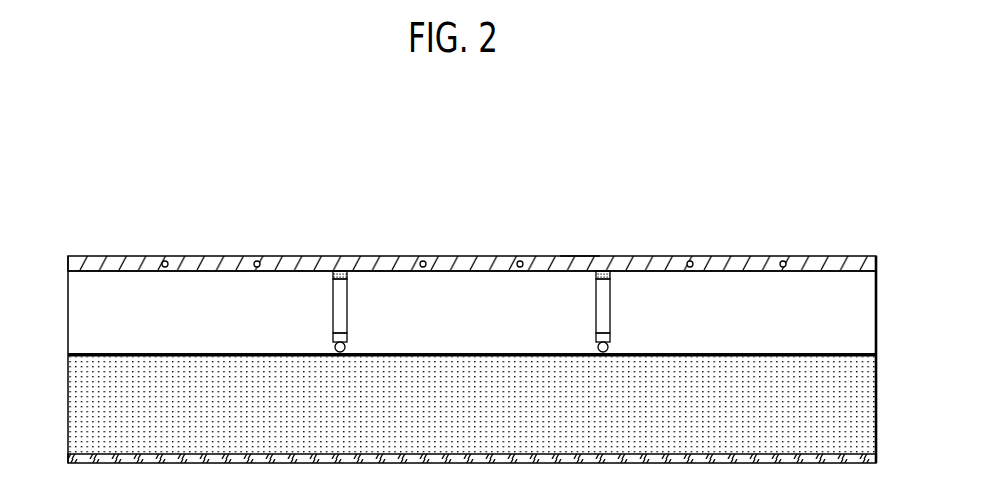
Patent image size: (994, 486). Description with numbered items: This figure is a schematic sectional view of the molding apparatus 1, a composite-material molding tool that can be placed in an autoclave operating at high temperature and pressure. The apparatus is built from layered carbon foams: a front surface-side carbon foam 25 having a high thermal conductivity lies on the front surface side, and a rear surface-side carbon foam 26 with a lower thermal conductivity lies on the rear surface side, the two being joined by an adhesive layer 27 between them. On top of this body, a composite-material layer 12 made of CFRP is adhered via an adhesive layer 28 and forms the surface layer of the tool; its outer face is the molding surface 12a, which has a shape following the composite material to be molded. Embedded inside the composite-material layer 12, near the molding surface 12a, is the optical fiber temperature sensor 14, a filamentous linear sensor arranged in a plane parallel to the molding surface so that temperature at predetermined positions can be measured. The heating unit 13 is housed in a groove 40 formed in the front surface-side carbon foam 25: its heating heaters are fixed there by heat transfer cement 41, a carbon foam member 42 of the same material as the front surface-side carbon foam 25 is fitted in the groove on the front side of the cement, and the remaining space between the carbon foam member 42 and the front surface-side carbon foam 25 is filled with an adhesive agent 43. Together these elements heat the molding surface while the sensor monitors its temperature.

The molding apparatus 1 is at (500, 204).
The composite-material layer 12 is at (115, 256).
The molding surface 12a is at (579, 256).
The heating unit 13 is at (334, 349).
The optical fiber temperature sensor 14 is at (256, 260).
The front surface-side carbon foam 25 is at (877, 308).
The rear surface-side carbon foam 26 is at (877, 405).
The adhesive layer 27 is at (68, 355).
The adhesive layer 28 is at (68, 271).
The groove 40 is at (423, 316).
The heat transfer cement 41 is at (379, 344).
The carbon foam member 42 is at (348, 305).
The adhesive agent 43 is at (348, 276).